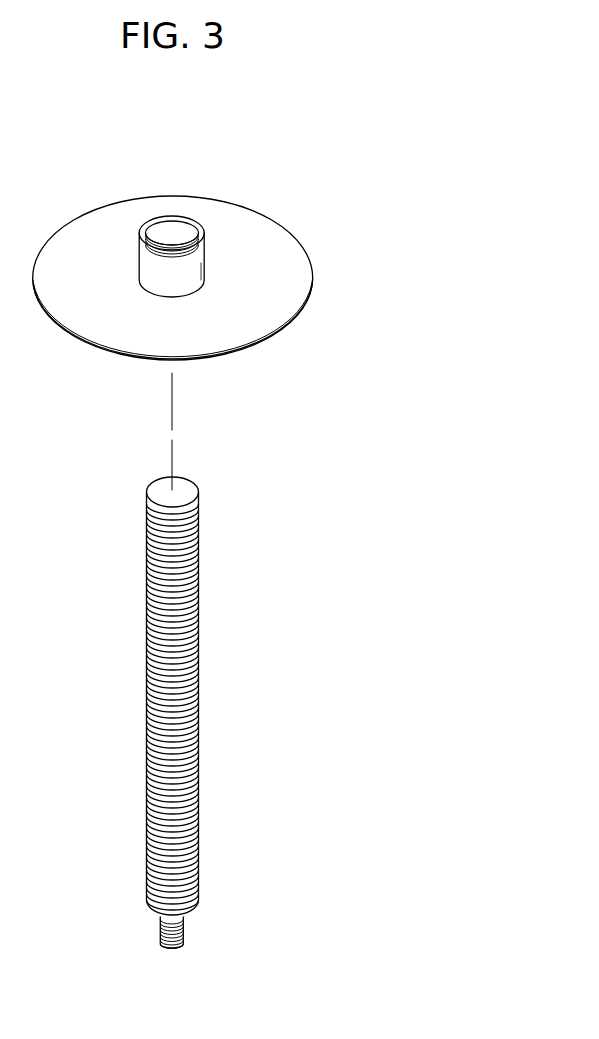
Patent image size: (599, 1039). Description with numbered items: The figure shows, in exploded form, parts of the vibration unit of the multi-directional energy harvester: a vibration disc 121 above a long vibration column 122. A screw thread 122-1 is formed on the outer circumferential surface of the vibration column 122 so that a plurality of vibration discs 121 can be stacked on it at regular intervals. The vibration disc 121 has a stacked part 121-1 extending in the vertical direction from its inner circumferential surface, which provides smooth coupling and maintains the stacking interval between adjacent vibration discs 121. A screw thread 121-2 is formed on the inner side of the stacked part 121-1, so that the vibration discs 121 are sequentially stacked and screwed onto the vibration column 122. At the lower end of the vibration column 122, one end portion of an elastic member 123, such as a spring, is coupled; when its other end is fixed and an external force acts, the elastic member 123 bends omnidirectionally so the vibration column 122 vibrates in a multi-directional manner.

The vibration disc 121 is at (302, 246).
The stacked part 121-1 is at (203, 262).
The screw thread 121-2 is at (162, 231).
The vibration column 122 is at (260, 696).
The screw thread 122-1 is at (198, 684).
The elastic member 123 is at (184, 930).